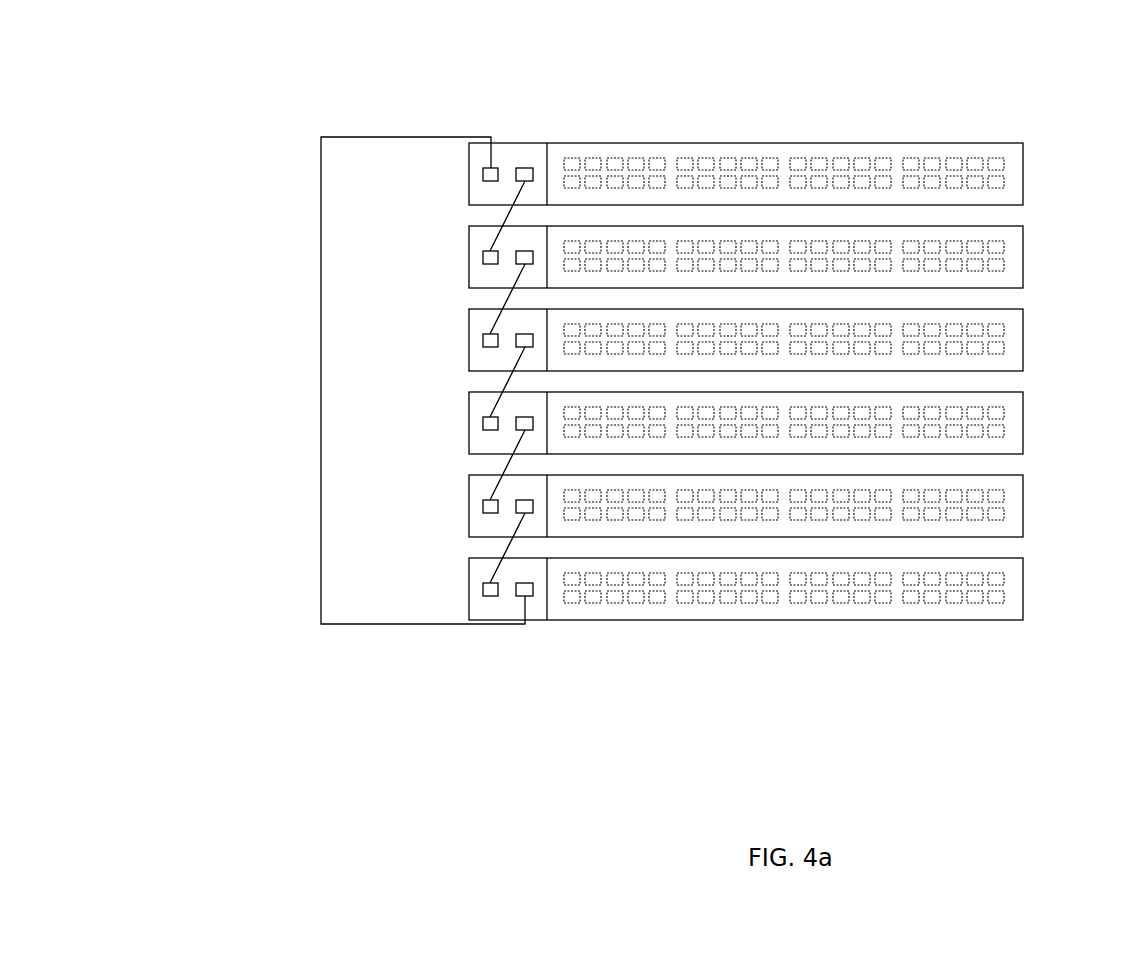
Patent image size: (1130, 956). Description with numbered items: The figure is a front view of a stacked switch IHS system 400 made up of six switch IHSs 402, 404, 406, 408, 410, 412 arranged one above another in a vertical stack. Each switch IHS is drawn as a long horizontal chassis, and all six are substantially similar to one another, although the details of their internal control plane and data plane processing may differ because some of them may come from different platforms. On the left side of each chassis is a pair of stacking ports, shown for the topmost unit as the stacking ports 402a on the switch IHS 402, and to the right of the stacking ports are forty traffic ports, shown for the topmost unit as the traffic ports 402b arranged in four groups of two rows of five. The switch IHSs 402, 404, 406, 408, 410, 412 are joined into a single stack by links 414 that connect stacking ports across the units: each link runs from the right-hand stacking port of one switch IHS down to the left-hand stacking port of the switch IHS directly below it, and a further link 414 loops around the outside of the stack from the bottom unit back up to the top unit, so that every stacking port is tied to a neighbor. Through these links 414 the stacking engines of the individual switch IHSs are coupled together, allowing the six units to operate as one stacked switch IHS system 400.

The stacked switch IHS system 400 is at (300, 100).
The switch IHS 402 is at (786, 135).
The stacking ports 402a is at (525, 167).
The traffic ports 402b is at (916, 162).
The switch IHS 404 is at (1023, 226).
The switch IHS 406 is at (1023, 309).
The switch IHS 408 is at (1023, 392).
The switch IHS 410 is at (1023, 475).
The switch IHS 412 is at (1023, 558).
The links 414 is at (507, 217).